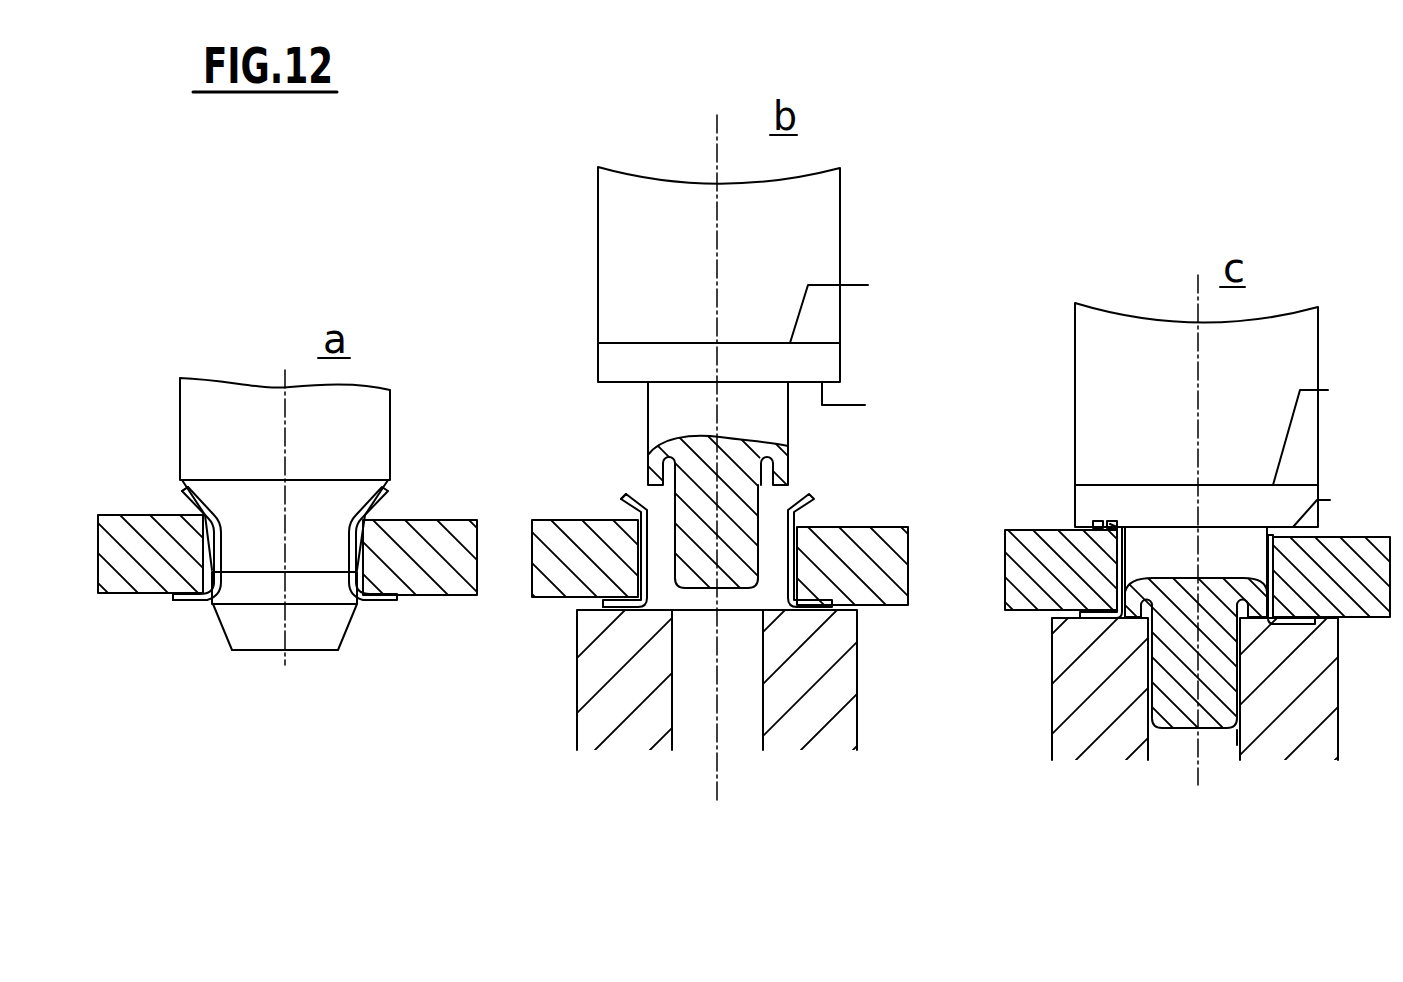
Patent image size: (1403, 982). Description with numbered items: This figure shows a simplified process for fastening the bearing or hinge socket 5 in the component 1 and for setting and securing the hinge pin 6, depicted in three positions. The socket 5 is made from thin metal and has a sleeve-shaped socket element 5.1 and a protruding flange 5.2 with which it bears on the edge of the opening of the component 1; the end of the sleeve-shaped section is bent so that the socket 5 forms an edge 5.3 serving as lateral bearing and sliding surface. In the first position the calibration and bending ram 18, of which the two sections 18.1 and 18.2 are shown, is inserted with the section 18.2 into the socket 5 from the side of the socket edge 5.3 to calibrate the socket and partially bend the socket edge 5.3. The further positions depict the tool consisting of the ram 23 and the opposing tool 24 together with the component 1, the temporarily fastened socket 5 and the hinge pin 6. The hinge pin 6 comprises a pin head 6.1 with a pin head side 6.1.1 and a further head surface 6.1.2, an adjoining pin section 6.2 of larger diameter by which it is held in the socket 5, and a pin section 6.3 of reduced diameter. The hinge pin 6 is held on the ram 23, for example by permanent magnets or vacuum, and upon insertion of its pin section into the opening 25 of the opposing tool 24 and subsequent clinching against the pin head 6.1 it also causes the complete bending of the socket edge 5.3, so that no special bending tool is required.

The component 1 is at (455, 532).
The bearing or hinge socket 5 is at (706, 603).
The sleeve-shaped socket element 5.1 is at (373, 603).
The flange 5.2 is at (193, 605).
The socket edge 5.3 is at (638, 480).
The hinge pin 6 is at (950, 546).
The pin head 6.1 is at (1000, 396).
The pin head side 6.1.1 is at (1330, 458).
The inclined surface of punch plate 6.1.2 is at (1094, 375).
The pin section 6.2 is at (760, 422).
The pin section 6.3 is at (732, 577).
The calibration and bending ram 18 is at (365, 567).
The section of calibration and bending ram 18.1 is at (357, 418).
The section of calibration and bending ram 18.2 is at (348, 653).
The ram 23 is at (818, 240).
The opposing tool 24 is at (848, 728).
The opening 25 is at (1233, 743).